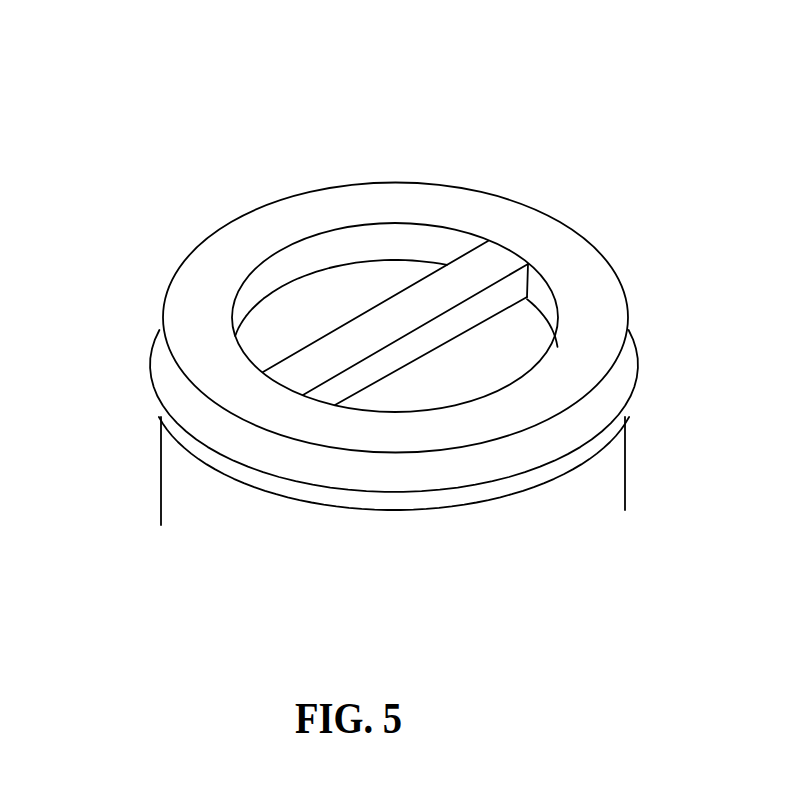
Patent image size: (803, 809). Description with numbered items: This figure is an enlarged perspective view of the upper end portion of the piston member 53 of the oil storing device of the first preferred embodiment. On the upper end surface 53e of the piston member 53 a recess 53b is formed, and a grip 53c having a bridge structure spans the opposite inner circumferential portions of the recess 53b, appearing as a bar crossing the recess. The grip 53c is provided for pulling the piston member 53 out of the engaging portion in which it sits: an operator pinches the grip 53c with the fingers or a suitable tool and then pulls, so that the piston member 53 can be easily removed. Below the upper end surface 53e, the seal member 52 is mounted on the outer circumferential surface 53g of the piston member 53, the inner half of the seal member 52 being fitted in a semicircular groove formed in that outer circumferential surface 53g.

The piston member 53 is at (436, 271).
The recess 53b is at (342, 290).
The grip 53c is at (422, 303).
The upper end surface 53e is at (497, 213).
The outer circumferential surface 53g is at (612, 472).
The seal member 52 is at (163, 400).